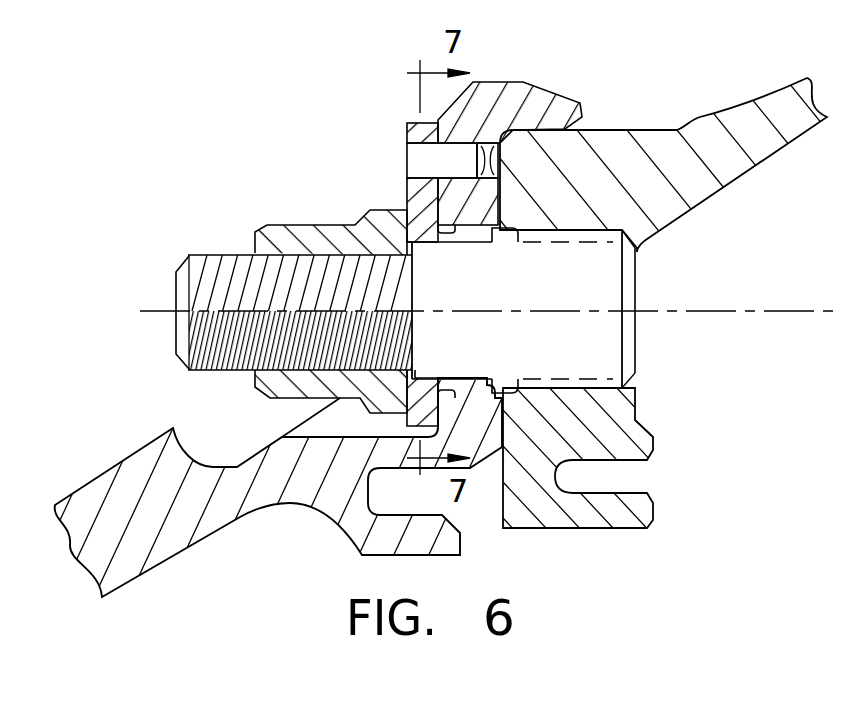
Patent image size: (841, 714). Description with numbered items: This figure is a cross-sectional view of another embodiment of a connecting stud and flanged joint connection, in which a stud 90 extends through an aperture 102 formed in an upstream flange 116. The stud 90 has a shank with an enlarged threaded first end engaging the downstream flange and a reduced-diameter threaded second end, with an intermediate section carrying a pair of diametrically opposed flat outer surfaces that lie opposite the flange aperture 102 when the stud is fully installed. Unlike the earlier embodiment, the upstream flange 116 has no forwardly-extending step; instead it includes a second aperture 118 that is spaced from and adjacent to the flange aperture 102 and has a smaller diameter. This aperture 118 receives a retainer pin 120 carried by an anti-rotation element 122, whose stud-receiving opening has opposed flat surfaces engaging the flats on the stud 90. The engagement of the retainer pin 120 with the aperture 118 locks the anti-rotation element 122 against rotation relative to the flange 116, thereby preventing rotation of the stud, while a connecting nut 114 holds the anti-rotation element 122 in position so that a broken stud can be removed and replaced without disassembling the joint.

The stud 90 is at (458, 295).
The aperture 102 is at (467, 226).
The connecting nut 114 is at (310, 237).
The upstream flange 116 is at (477, 102).
The aperture 118 is at (508, 130).
The retainer pin 120 is at (417, 163).
The anti-rotation element 122 is at (417, 193).